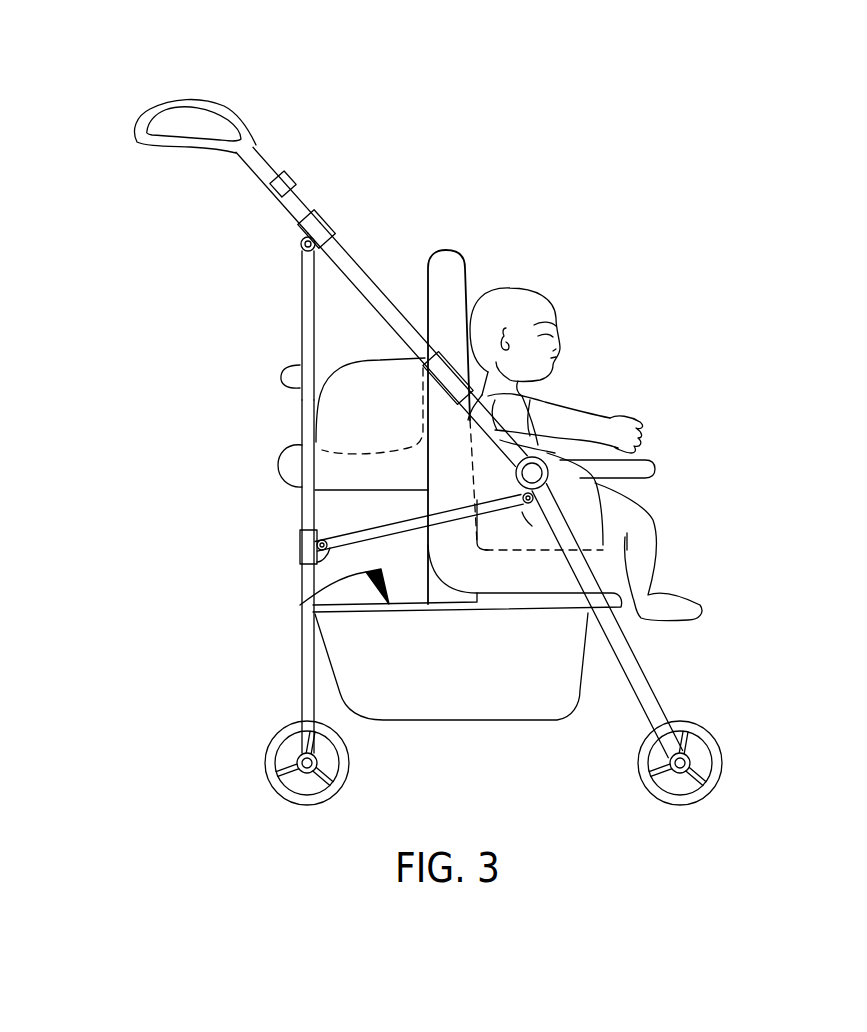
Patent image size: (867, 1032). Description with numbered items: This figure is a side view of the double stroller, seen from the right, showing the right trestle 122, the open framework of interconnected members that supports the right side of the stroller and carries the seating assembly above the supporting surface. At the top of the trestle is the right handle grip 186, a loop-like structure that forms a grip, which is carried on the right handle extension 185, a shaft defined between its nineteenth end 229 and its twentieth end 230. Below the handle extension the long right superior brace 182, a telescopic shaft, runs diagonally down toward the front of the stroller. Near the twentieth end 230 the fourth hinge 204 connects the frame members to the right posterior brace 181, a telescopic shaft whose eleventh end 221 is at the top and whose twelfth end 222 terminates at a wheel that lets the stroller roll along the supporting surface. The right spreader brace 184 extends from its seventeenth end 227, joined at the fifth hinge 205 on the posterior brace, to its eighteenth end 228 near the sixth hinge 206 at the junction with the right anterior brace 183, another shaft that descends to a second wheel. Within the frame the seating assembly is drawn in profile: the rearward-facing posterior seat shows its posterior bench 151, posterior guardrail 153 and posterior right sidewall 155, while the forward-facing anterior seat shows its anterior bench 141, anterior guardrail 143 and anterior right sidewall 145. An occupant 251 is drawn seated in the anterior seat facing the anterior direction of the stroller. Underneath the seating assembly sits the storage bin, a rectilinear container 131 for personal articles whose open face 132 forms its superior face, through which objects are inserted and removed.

The right trestle 122 is at (158, 110).
The right handle grip 186 is at (193, 100).
The right handle extension 185 is at (305, 195).
The right superior brace 182 is at (387, 303).
The nineteenth end 229 is at (287, 178).
The twentieth end 230 is at (301, 208).
The fourth hinge 204 is at (302, 249).
The eleventh end 221 is at (301, 278).
The right posterior brace 181 is at (300, 520).
The posterior guardrail 153 is at (283, 373).
The posterior right sidewall 155 is at (335, 408).
The posterior bench 151 is at (358, 472).
The fifth hinge 205 is at (300, 553).
The seventeenth end 227 is at (323, 574).
The right spreader brace 184 is at (400, 522).
The eighteenth end 228 is at (514, 504).
The sixth hinge 206 is at (530, 505).
The right anterior brace 183 is at (647, 683).
The twelfth end 222 is at (293, 740).
The container 131 is at (545, 678).
The open face 132 is at (300, 605).
The anterior guardrail 143 is at (668, 448).
The anterior bench 141 is at (608, 577).
The anterior right sidewall 145 is at (570, 477).
The occupant 251 is at (545, 294).